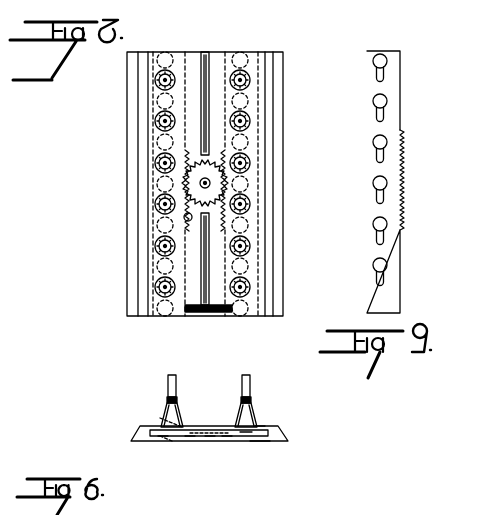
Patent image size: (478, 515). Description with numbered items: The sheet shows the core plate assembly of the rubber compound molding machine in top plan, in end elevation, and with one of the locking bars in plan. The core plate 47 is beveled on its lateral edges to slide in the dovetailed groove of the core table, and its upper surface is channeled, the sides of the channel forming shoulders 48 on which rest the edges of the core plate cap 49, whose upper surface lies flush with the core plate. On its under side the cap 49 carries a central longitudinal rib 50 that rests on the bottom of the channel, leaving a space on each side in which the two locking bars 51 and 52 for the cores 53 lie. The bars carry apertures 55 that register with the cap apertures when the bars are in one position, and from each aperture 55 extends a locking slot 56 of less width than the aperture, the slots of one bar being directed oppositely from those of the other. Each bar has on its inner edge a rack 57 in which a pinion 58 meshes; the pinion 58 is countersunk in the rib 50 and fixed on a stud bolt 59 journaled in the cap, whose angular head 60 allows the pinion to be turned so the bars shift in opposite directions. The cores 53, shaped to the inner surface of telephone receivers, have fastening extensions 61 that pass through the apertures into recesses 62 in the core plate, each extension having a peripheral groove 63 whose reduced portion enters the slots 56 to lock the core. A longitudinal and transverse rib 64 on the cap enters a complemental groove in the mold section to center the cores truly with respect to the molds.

In FIG. 5, the core plate 47 is at (283, 292).
In FIG. 6, the core plate 47 is at (276, 441).
In FIG. 6, the shoulders 48 is at (150, 431).
In FIG. 5, the core plate cap 49 is at (170, 312).
In FIG. 6, the core plate cap 49 is at (262, 427).
In FIG. 6, the central longitudinal rib 50 is at (210, 437).
In FIG. 5, the locking bar 51 is at (150, 297).
In FIG. 9, the locking bar 51 is at (367, 304).
In FIG. 6, the locking bar 51 is at (162, 437).
In FIG. 5, the locking bar 52 is at (265, 253).
In FIG. 6, the locking bar 52 is at (258, 441).
In FIG. 5, the cores 53 is at (250, 205).
In FIG. 6, the cores 53 is at (243, 390).
In FIG. 5, the apertures 55 is at (160, 103).
In FIG. 9, the apertures 55 is at (373, 61).
In FIG. 5, the locking slot 56 is at (160, 113).
In FIG. 9, the locking slot 56 is at (384, 75).
In FIG. 5, the rack 57 is at (152, 222).
In FIG. 9, the rack 57 is at (402, 166).
In FIG. 5, the pinion 58 is at (150, 176).
In FIG. 6, the pinion 58 is at (190, 437).
In FIG. 6, the stud bolt 59 is at (226, 437).
In FIG. 5, the angular head 60 is at (200, 184).
In FIG. 6, the fastening extensions 61 is at (160, 420).
In FIG. 6, the recesses 62 is at (167, 441).
In FIG. 6, the peripheral groove 63 is at (248, 430).
In FIG. 5, the longitudinal and transverse rib 64 is at (225, 312).
In FIG. 6, the longitudinal and transverse rib 64 is at (206, 430).